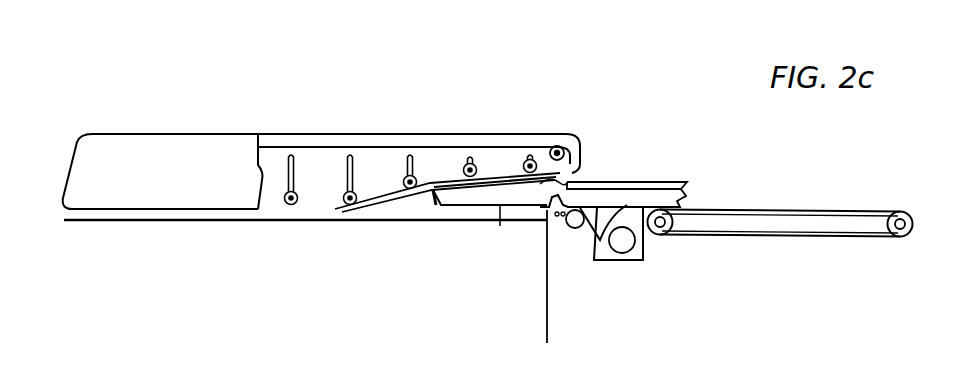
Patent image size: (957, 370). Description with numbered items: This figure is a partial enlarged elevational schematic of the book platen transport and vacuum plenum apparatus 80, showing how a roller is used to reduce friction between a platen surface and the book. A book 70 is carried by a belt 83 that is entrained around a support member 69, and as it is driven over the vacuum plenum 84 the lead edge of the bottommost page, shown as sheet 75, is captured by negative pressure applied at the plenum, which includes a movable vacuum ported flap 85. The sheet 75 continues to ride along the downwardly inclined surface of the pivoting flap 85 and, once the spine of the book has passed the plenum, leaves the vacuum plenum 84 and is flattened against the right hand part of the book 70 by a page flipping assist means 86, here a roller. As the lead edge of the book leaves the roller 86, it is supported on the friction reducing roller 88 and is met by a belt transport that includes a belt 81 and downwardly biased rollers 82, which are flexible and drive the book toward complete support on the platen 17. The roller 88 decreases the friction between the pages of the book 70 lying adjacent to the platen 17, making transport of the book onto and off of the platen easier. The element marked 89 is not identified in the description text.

The platen 17 is at (362, 217).
The support member 69 is at (807, 218).
The book 70 is at (648, 190).
The sheet 75 is at (600, 262).
The book platen transport scheme and vacuum plenum apparatus 80 is at (466, 117).
The belt 81 is at (383, 195).
The downwardly biased rollers 82 is at (463, 172).
The belt 83 is at (747, 237).
The vacuum plenum 84 is at (637, 262).
The movable vacuum ported flap 85 is at (592, 232).
The page flipping assist means 86 is at (547, 230).
The roller 88 is at (500, 212).
The rail end 89 is at (572, 180).